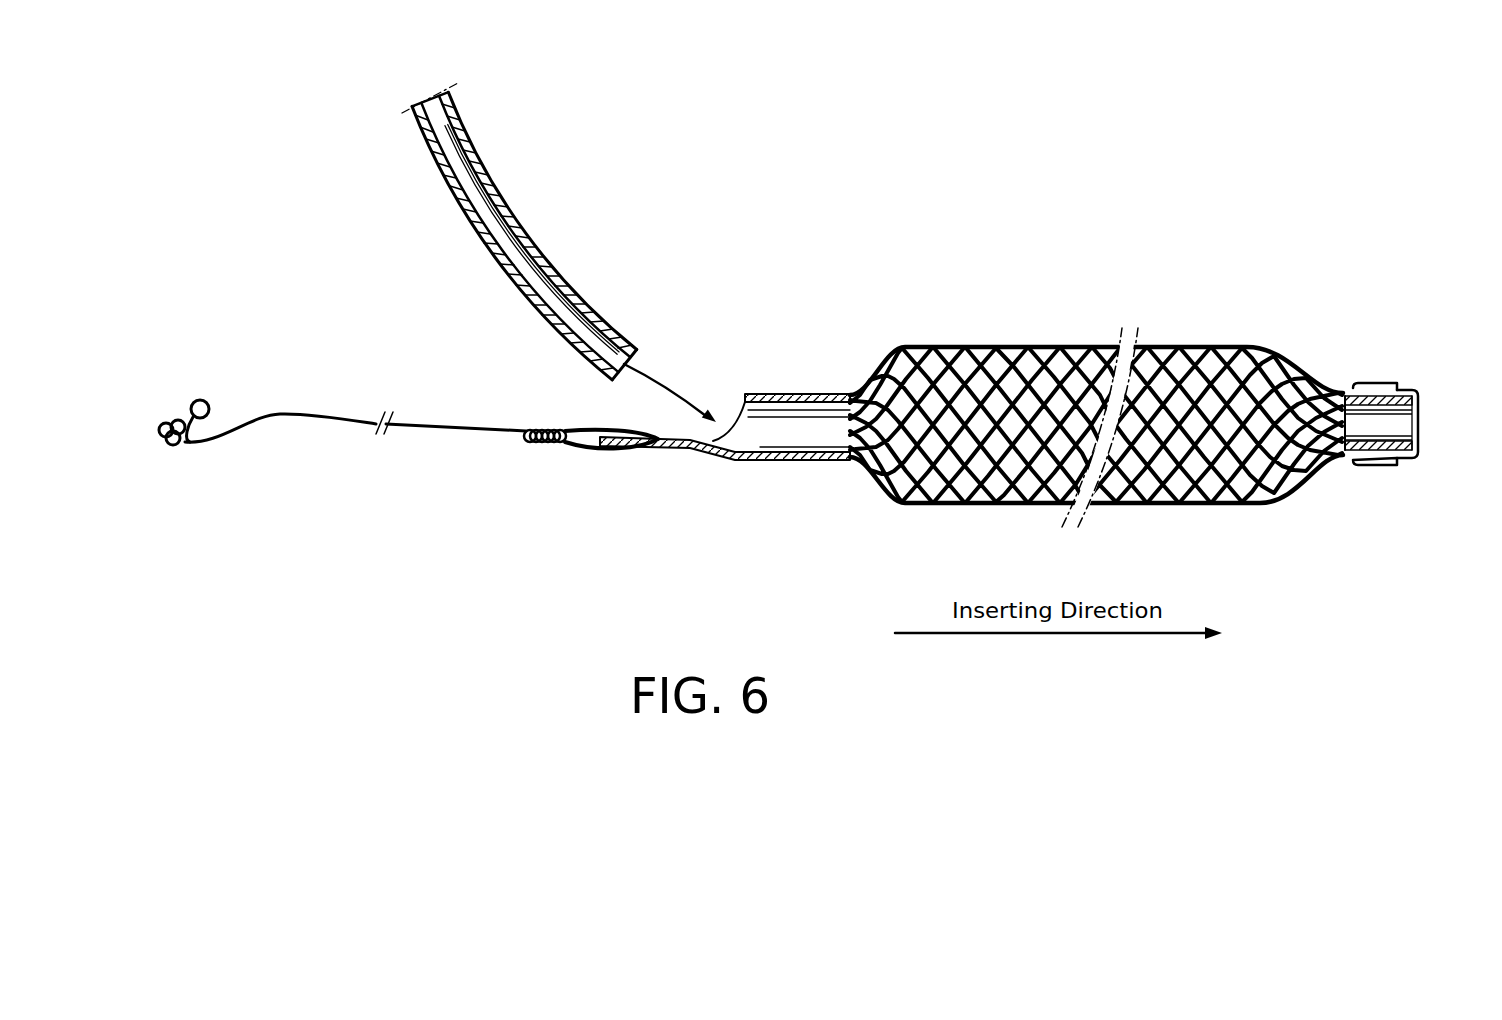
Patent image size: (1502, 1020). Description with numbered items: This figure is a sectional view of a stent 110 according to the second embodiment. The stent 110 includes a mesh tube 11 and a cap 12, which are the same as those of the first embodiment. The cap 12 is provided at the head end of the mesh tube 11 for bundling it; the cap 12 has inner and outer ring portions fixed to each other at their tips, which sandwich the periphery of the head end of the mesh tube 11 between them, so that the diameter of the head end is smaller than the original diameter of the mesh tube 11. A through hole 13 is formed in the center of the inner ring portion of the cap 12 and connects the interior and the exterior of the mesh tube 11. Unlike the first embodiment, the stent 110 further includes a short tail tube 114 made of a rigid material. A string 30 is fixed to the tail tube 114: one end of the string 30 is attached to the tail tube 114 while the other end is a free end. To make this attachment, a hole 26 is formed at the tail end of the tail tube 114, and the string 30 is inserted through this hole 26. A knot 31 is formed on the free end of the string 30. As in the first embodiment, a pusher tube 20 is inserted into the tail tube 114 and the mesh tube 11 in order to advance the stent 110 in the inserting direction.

The pusher tube 20 is at (508, 213).
The stent 110 is at (1164, 390).
The mesh tube 11 is at (1211, 346).
The cap 12 is at (1357, 383).
The through hole 13 is at (1419, 433).
The tail tube 114 is at (753, 393).
The hole 26 is at (667, 457).
The string 30 is at (343, 413).
The knot 31 is at (178, 404).